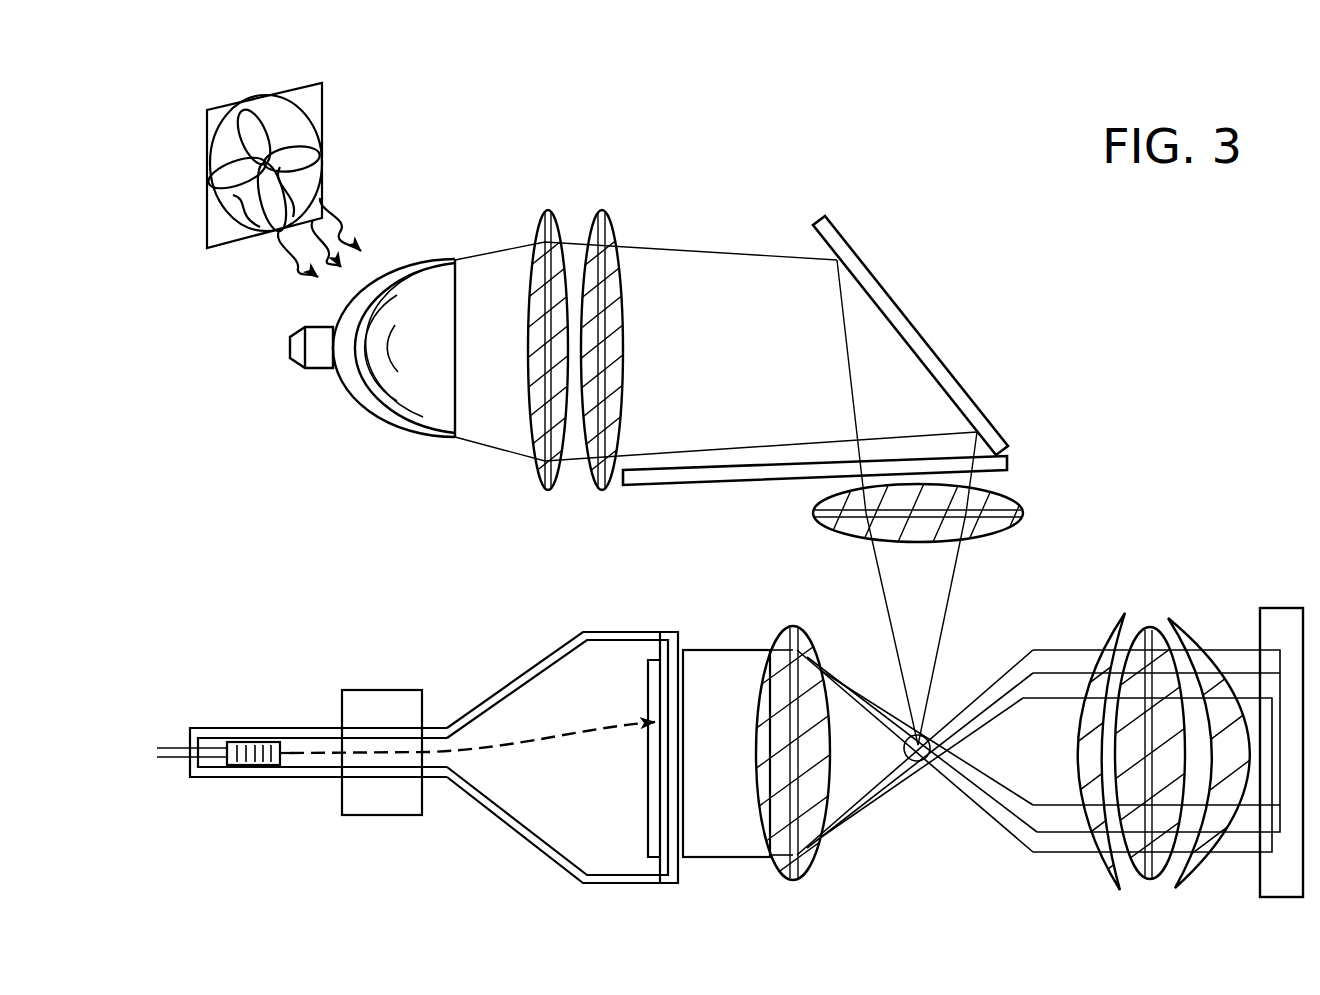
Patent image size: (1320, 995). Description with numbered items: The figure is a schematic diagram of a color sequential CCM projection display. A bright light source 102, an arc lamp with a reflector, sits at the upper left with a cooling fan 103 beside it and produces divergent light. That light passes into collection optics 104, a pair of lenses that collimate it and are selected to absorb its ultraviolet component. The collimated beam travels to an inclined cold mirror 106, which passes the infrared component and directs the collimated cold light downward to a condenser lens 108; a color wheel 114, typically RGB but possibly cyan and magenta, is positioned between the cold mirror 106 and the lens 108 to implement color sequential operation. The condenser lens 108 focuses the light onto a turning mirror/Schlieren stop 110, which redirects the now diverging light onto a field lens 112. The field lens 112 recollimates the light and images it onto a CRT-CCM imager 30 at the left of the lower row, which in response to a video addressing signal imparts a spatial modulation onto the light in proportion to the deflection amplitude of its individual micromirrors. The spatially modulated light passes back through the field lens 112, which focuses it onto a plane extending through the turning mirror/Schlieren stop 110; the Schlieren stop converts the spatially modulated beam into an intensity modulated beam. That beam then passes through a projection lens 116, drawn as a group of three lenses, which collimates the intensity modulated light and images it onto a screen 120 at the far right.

The CRT-CCM imager 30 is at (521, 654).
The bright light source 102 is at (415, 290).
The cooling fan 103 is at (297, 90).
The collection optics 104 is at (579, 197).
The cold mirror 106 is at (875, 272).
The condenser lens 108 is at (1010, 508).
The turning mirror/Schlieren stop 110 is at (928, 726).
The field lens 112 is at (780, 636).
The color wheel 114 is at (1007, 462).
The projection lens 116 is at (1142, 607).
The screen 120 is at (1283, 618).